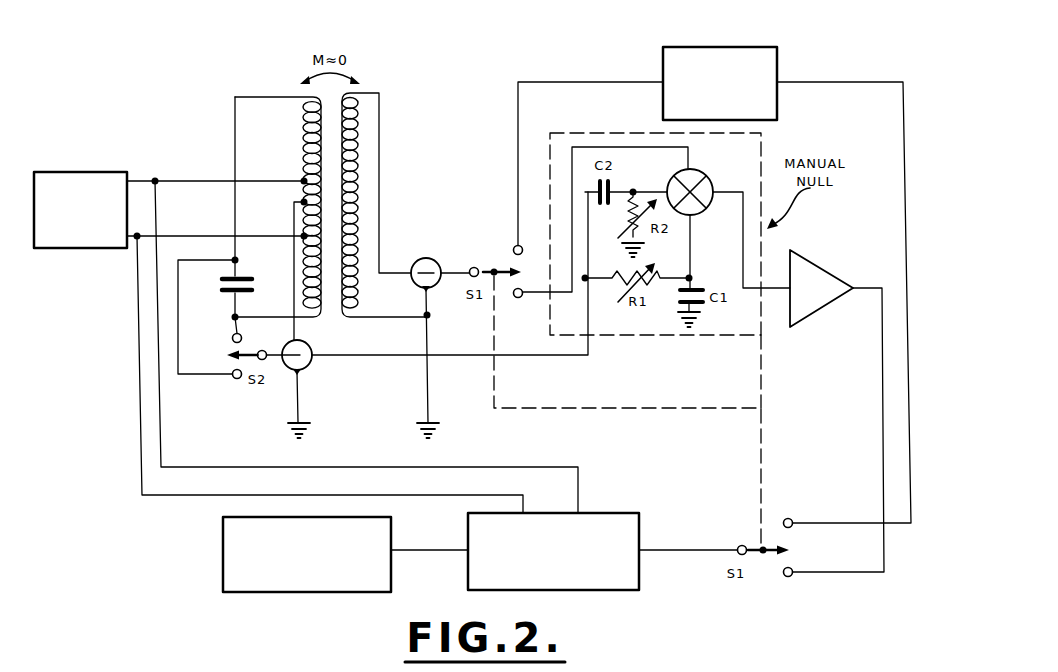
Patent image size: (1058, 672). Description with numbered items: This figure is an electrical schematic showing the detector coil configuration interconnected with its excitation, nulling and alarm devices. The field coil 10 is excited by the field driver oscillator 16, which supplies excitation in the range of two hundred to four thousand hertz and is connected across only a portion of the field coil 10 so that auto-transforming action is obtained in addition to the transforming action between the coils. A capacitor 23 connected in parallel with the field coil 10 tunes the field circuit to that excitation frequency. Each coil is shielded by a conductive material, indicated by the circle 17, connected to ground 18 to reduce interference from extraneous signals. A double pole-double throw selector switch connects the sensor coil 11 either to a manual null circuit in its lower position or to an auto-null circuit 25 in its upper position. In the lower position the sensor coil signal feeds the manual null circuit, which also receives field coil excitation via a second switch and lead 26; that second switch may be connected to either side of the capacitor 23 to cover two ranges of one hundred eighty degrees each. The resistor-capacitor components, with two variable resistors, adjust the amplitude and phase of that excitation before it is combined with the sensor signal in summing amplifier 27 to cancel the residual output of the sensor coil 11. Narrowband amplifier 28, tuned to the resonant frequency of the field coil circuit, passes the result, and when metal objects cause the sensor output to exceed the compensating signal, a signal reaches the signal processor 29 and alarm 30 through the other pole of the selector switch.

The field coil 10 is at (304, 132).
The sensor coil 11 is at (358, 140).
The field driver oscillator 16 is at (81, 172).
The conductive shield 17 is at (320, 348).
The ground 18 is at (287, 426).
The capacitor 23 is at (251, 272).
The auto-null circuit 25 is at (778, 69).
The lead 26 is at (358, 358).
The summing amplifier 27 is at (703, 170).
The narrowband amplifier 28 is at (812, 263).
The signal processor 29 is at (606, 513).
The alarm 30 is at (274, 554).